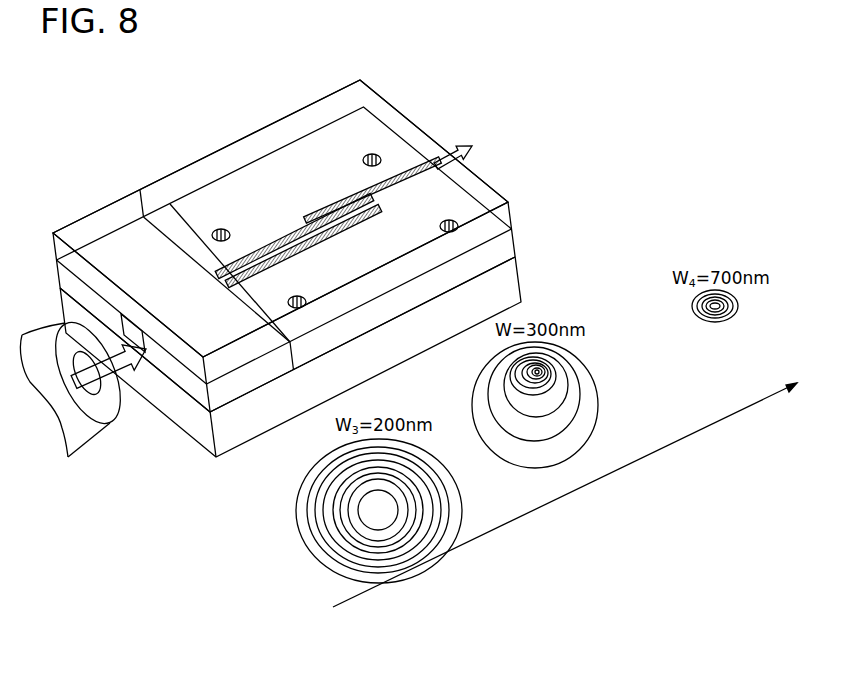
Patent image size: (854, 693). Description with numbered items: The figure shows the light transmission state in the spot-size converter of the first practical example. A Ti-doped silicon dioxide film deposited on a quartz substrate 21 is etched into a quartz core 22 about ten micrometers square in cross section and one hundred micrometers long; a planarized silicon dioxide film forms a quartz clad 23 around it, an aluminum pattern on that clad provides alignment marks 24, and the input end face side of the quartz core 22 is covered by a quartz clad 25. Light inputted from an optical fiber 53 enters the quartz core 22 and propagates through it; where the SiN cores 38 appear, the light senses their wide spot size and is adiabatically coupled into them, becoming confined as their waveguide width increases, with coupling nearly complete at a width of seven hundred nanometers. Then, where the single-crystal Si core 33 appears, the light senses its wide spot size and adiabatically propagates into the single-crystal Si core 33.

The quartz substrate 21 is at (523, 287).
The quartz core 22 is at (137, 337).
The quartz clad 23 is at (518, 251).
The alignment marks 24 is at (378, 155).
The quartz clad 25 is at (88, 230).
The single-crystal Si core 33 is at (429, 169).
The SiN cores 38 is at (259, 255).
The optical fiber 53 is at (85, 419).